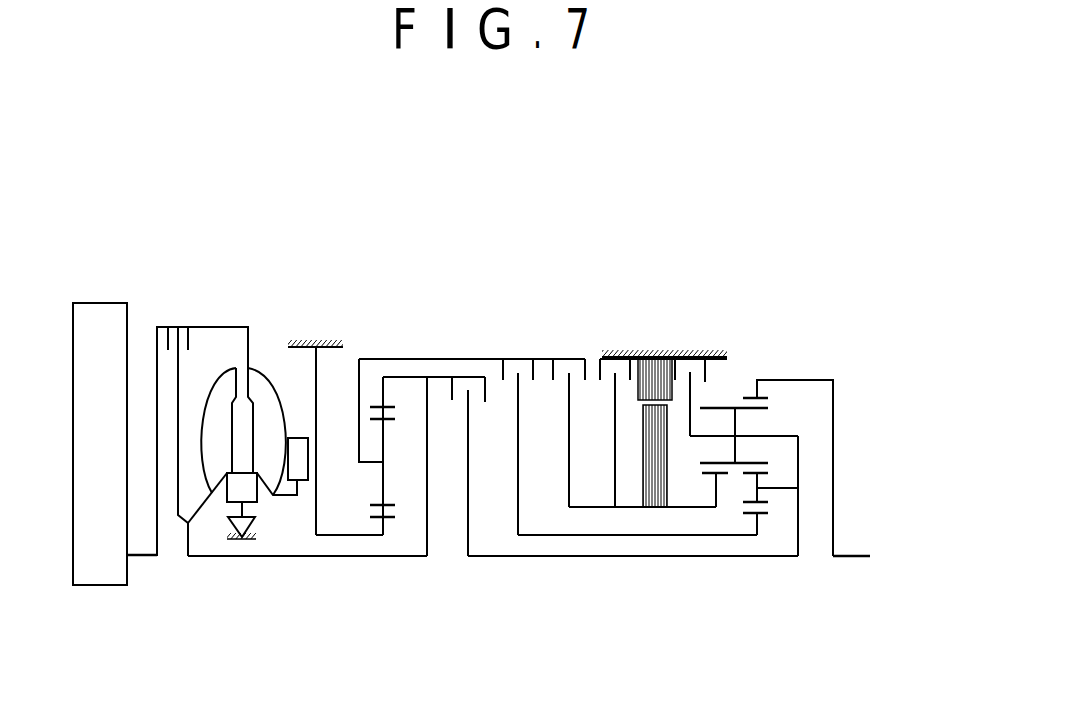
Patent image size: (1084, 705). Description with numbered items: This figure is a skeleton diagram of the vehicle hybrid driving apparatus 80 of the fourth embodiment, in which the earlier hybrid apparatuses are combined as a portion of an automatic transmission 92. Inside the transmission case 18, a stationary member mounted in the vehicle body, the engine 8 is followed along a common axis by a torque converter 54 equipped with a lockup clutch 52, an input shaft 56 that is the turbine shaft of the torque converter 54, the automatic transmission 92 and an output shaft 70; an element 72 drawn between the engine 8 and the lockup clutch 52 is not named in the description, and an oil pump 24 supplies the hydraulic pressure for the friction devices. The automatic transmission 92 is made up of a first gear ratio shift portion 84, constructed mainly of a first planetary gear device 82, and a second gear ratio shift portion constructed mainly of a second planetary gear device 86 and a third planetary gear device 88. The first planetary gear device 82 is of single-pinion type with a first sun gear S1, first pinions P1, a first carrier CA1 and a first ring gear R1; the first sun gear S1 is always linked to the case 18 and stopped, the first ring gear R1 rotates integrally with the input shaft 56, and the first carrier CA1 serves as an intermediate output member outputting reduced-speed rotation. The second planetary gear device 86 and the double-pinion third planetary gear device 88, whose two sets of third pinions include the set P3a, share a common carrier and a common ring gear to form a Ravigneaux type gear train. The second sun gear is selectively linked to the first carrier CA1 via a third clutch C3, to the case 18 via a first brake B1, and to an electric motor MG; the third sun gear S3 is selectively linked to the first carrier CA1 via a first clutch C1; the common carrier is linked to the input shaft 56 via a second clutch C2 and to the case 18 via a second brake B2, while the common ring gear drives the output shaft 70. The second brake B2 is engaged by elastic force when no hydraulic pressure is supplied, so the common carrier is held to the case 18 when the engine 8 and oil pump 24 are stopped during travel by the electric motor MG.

The engine 8 is at (90, 317).
The engine output shaft 72 is at (142, 557).
The lockup clutch 52 is at (188, 338).
The torque converter 54 is at (268, 340).
The oil pump 24 is at (293, 447).
The input shaft 56 is at (250, 557).
The transmission case 18 is at (241, 548).
The vehicle hybrid driving apparatus 80 is at (553, 210).
The first gear ratio shift portion 84 is at (415, 328).
The first planetary gear device 82 is at (346, 515).
The automatic transmission 92 is at (672, 333).
The second planetary gear device 86 is at (705, 477).
The third planetary gear device 88 is at (746, 553).
The output shaft 70 is at (860, 557).
The first ring gear R1 is at (400, 398).
The first pinions P1 is at (397, 503).
The first sun gear S1 is at (395, 520).
The first carrier CA1 is at (377, 463).
The first clutch C1 is at (518, 434).
The second clutch C2 is at (478, 466).
The third clutch C3 is at (569, 420).
The first brake B1 is at (615, 351).
The second brake B2 is at (706, 397).
The electric motor MG is at (637, 420).
The third sun gear S3 is at (760, 515).
The third pinions P3a is at (743, 496).